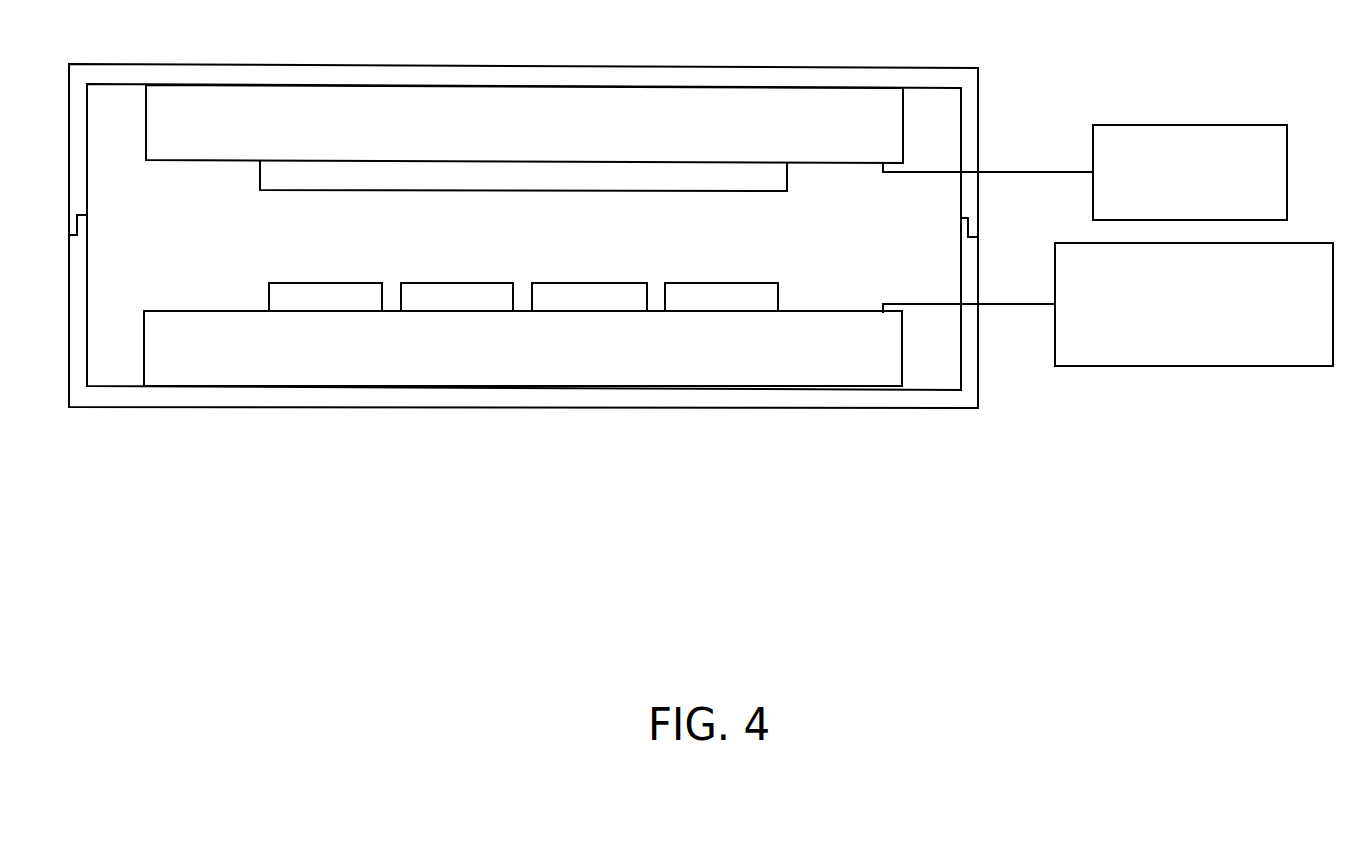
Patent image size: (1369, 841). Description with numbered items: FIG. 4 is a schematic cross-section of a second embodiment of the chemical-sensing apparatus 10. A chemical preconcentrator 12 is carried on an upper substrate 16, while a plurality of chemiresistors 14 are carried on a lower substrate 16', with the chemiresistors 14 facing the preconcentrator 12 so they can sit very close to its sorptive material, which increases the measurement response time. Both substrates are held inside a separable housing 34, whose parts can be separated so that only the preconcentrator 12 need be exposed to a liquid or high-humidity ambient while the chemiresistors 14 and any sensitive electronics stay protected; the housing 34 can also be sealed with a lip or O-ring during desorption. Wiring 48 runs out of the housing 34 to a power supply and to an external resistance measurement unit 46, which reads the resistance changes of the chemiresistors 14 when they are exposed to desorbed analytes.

The chemical-sensing apparatus 10 is at (701, 302).
The chemical preconcentrator 12 is at (278, 190).
The chemiresistors 14 is at (523, 272).
The substrate 16 is at (524, 124).
The substrate 16' is at (523, 348).
The separable housing 34 is at (439, 408).
The resistance measurement unit 46 is at (1194, 304).
The wiring 48 is at (1012, 173).